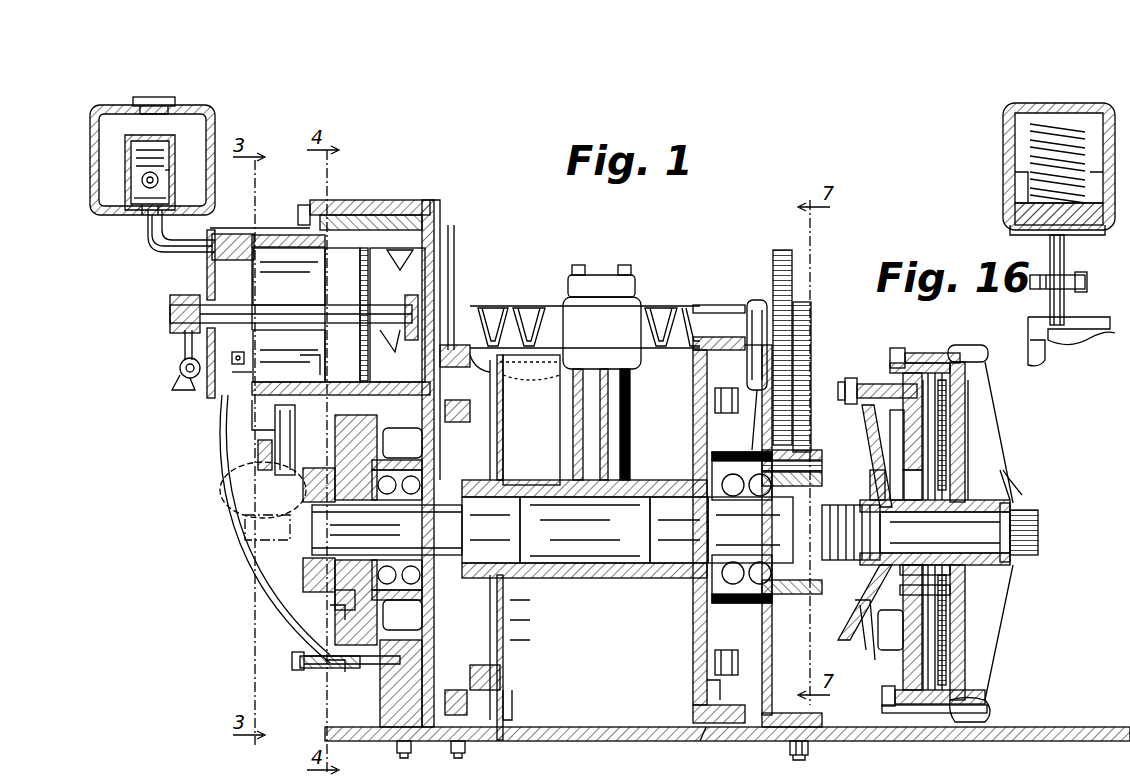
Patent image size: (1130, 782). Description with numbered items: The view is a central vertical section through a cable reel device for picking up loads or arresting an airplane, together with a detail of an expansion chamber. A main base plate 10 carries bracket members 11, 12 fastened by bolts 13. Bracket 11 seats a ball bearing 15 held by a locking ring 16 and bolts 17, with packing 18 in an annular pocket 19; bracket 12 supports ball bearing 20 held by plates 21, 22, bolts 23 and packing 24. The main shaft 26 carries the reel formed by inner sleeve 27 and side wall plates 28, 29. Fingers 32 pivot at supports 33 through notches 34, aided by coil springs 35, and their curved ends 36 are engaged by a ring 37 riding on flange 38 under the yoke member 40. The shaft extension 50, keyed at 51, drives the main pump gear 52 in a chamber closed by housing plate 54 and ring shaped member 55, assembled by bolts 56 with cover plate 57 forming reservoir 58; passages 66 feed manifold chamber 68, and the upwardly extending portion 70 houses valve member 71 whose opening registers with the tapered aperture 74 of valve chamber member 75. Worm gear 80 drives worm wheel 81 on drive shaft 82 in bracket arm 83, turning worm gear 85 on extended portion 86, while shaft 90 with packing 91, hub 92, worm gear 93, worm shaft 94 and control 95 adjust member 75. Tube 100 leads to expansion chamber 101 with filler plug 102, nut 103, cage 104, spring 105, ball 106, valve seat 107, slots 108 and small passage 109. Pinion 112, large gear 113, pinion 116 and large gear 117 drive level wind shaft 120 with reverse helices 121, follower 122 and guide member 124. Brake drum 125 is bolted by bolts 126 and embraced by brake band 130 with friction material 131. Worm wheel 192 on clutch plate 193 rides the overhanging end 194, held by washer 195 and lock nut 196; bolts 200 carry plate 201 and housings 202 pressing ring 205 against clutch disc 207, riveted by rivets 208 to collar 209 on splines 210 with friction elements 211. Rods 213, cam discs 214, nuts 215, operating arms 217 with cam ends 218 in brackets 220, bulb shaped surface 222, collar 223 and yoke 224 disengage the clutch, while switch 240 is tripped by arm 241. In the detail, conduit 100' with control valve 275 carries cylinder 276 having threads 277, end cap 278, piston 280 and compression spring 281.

In FIG. 1, the main base plate 10 is at (612, 741).
In FIG. 1, the bracket member 11 is at (385, 700).
In FIG. 1, the bracket member 12 is at (770, 645).
In FIG. 1, the bolts 13 is at (412, 752).
In FIG. 1, the ball bearing 15 is at (452, 532).
In FIG. 1, the locking ring 16 is at (387, 530).
In FIG. 1, the bolts 17 is at (335, 600).
In FIG. 1, the packing 18 is at (440, 470).
In FIG. 1, the annular pocket 19 is at (450, 550).
In FIG. 1, the ball bearing 20 is at (722, 506).
In FIG. 1, the plate 21 is at (708, 480).
In FIG. 1, the plate 22 is at (800, 467).
In FIG. 1, the bolts 23 is at (708, 460).
In FIG. 1, the packing 24 is at (800, 484).
In FIG. 1, the main shaft 26 is at (512, 578).
In FIG. 1, the inner sleeve 27 is at (614, 578).
In FIG. 1, the side wall plate 28 is at (503, 630).
In FIG. 1, the side wall plate 29 is at (693, 632).
In FIG. 1, the fingers 32 is at (500, 355).
In FIG. 1, the pivot supports 33 is at (503, 400).
In FIG. 1, the notches 34 is at (512, 710).
In FIG. 1, the coil springs 35 is at (500, 680).
In FIG. 1, the curved ends 36 is at (472, 330).
In FIG. 1, the ring 37 is at (460, 300).
In FIG. 1, the flange 38 is at (503, 418).
In FIG. 1, the yoke member 40 is at (452, 262).
In FIG. 1, the shaft extension 50 is at (303, 550).
In FIG. 1, the key 51 is at (303, 500).
In FIG. 1, the main pump gear 52 is at (330, 612).
In FIG. 1, the housing plate 54 is at (326, 199).
In FIG. 1, the ring shaped member 55 is at (337, 200).
In FIG. 1, the bolts 56 is at (298, 212).
In FIG. 1, the cover plate 57 is at (212, 548).
In FIG. 16, the cover plate 57 is at (1028, 332).
In FIG. 1, the reservoir 58 is at (232, 588).
In FIG. 1, the passages 66 is at (386, 441).
In FIG. 1, the manifold chamber 68 is at (457, 422).
In FIG. 1, the upwardly extending portion 70 is at (422, 200).
In FIG. 1, the cylindrical valve member 71 is at (352, 394).
In FIG. 1, the aperture 74 is at (396, 378).
In FIG. 1, the valve chamber member 75 is at (376, 278).
In FIG. 1, the worm gear 80 is at (252, 541).
In FIG. 1, the worm wheel 81 is at (221, 490).
In FIG. 1, the drive shaft 82 is at (258, 452).
In FIG. 1, the bracket arm 83 is at (286, 442).
In FIG. 1, the worm gear 85 is at (253, 425).
In FIG. 1, the extended portion 86 is at (326, 360).
In FIG. 1, the shaft 90 is at (360, 310).
In FIG. 1, the packing 91 is at (252, 300).
In FIG. 1, the hub 92 is at (170, 305).
In FIG. 1, the worm gear 93 is at (182, 335).
In FIG. 1, the worm shaft 94 is at (180, 364).
In FIG. 1, the control 95 is at (170, 384).
In FIG. 1, the connecting tube 100 is at (181, 241).
In FIG. 16, the conduit 100' is at (1090, 280).
In FIG. 1, the expansion chamber 101 is at (92, 128).
In FIG. 1, the filler plug 102 is at (176, 101).
In FIG. 1, the nut 103 is at (170, 204).
In FIG. 1, the adjustable cage 104 is at (150, 163).
In FIG. 1, the spring 105 is at (172, 173).
In FIG. 1, the ball 106 is at (125, 185).
In FIG. 1, the valve seat 107 is at (166, 189).
In FIG. 1, the slots 108 is at (125, 152).
In FIG. 1, the small passage 109 is at (128, 213).
In FIG. 1, the pinion 112 is at (772, 582).
In FIG. 1, the large gear 113 is at (812, 350).
In FIG. 1, the pinion 116 is at (762, 428).
In FIG. 1, the large gear 117 is at (792, 235).
In FIG. 1, the level wind shaft 120 is at (716, 305).
In FIG. 1, the reverse helices 121 is at (662, 306).
In FIG. 1, the follower 122 is at (636, 278).
In FIG. 1, the guide member 124 is at (572, 452).
In FIG. 1, the brake drum 125 is at (693, 692).
In FIG. 1, the bolts 126 is at (714, 402).
In FIG. 1, the brake band 130 is at (693, 714).
In FIG. 1, the friction material 131 is at (705, 742).
In FIG. 1, the worm wheel 192 is at (988, 714).
In FIG. 1, the clutch plate 193 is at (992, 420).
In FIG. 1, the overhanging end 194 is at (1030, 536).
In FIG. 1, the washer 195 is at (1015, 493).
In FIG. 1, the lock nut 196 is at (1012, 504).
In FIG. 1, the bolts 200 is at (920, 363).
In FIG. 1, the plate 201 is at (882, 702).
In FIG. 1, the housings 202 is at (885, 672).
In FIG. 1, the ring 205 is at (958, 650).
In FIG. 1, the clutch disc 207 is at (962, 612).
In FIG. 1, the rivets 208 is at (955, 594).
In FIG. 1, the collar 209 is at (955, 570).
In FIG. 1, the splines 210 is at (945, 531).
In FIG. 1, the friction elements 211 is at (952, 672).
In FIG. 1, the rods 213 is at (870, 384).
In FIG. 1, the cam discs 214 is at (848, 378).
In FIG. 1, the nuts 215 is at (841, 382).
In FIG. 1, the operating arms 217 is at (868, 440).
In FIG. 1, the bifurcated cam shaped ends 218 is at (897, 348).
In FIG. 1, the brackets 220 is at (865, 630).
In FIG. 1, the bulb shaped surface 222 is at (851, 532).
In FIG. 1, the collar 223 is at (877, 455).
In FIG. 1, the yoke 224 is at (845, 608).
In FIG. 1, the switch 240 is at (246, 354).
In FIG. 1, the arm 241 is at (252, 396).
In FIG. 16, the control valve 275 is at (1082, 273).
In FIG. 16, the cylinder 276 is at (1013, 218).
In FIG. 16, the threads 277 is at (1003, 182).
In FIG. 16, the end cap 278 is at (1003, 109).
In FIG. 16, the piston 280 is at (1010, 233).
In FIG. 16, the compression spring 281 is at (1030, 152).